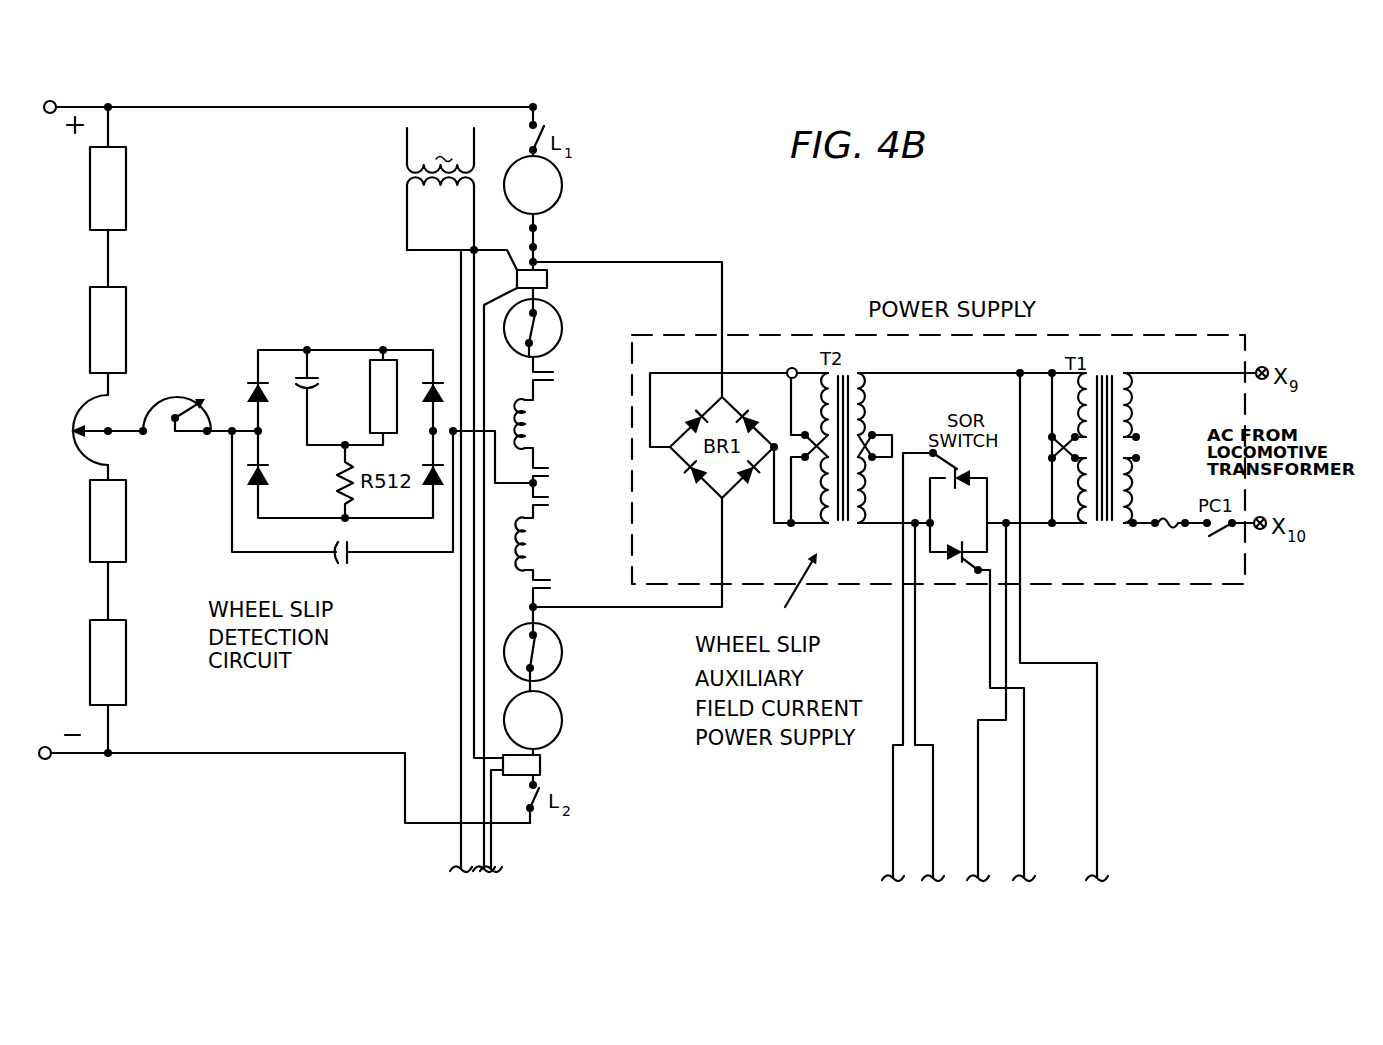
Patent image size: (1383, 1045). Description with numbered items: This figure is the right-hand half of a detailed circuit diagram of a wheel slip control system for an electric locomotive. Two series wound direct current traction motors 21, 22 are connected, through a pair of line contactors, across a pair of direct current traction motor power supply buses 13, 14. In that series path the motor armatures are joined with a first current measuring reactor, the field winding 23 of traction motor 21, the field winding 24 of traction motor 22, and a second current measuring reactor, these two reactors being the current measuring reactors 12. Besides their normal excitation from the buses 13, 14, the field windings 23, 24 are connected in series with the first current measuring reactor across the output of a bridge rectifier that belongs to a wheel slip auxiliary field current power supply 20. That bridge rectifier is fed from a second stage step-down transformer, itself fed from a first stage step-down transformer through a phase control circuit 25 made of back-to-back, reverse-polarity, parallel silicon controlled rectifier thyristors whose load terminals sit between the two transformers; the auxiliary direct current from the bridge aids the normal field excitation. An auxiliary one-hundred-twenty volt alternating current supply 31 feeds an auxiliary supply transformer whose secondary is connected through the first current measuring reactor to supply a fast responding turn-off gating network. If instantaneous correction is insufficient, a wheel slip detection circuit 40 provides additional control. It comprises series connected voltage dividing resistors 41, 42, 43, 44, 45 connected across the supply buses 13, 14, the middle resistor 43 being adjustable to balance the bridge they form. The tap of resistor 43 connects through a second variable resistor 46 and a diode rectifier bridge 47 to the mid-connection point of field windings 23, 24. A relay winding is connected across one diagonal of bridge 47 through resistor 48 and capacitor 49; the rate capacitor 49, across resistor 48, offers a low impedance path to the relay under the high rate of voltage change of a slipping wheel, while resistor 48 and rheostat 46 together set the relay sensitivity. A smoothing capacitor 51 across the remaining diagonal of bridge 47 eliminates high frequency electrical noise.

The current measuring reactor 12 is at (573, 525).
The direct current traction motor power supply bus 13 is at (288, 109).
The direct current traction motor power supply bus 14 is at (347, 752).
The wheel slip auxiliary field current power supply 20 is at (1130, 585).
The traction motor 21 is at (562, 184).
The traction motor 22 is at (562, 722).
The field winding 23 is at (511, 401).
The field winding 24 is at (514, 544).
The phase control circuit 25 is at (970, 526).
The auxiliary alternating current supply 31 is at (409, 152).
The wheel slip detection circuit 40 is at (186, 485).
The voltage dividing resistor 41 is at (126, 190).
The voltage dividing resistor 42 is at (126, 322).
The voltage dividing resistor 43 is at (84, 446).
The voltage dividing resistor 44 is at (126, 527).
The voltage dividing resistor 45 is at (126, 640).
The variable resistor 46 is at (190, 386).
The diode rectifier bridge 47 is at (313, 492).
The resistor 48 is at (398, 405).
The rate capacitor 49 is at (309, 392).
The smoothing capacitor 51 is at (332, 558).